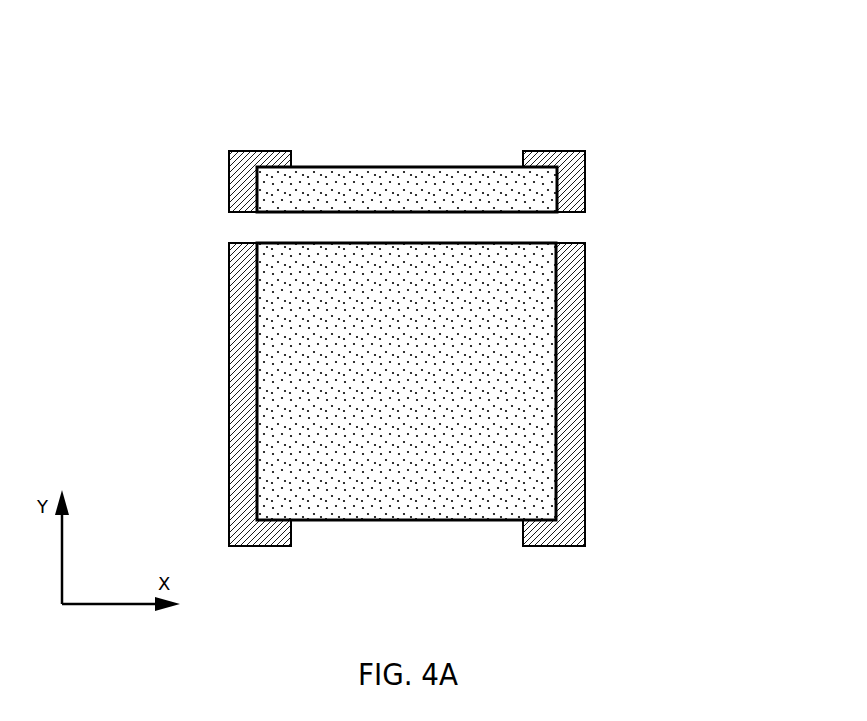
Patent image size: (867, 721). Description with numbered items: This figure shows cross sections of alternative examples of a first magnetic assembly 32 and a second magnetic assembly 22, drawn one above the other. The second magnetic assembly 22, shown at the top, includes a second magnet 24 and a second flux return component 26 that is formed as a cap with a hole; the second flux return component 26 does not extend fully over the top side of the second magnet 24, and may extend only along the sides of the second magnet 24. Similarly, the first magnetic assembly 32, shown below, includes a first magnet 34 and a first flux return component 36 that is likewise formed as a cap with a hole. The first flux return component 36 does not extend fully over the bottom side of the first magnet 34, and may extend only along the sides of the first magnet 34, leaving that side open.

The second magnetic assembly 22 is at (228, 166).
The second magnet 24 is at (310, 167).
The second flux return component 26 is at (260, 153).
The first magnetic assembly 32 is at (562, 548).
The first magnet 34 is at (558, 423).
The first flux return component 36 is at (585, 475).